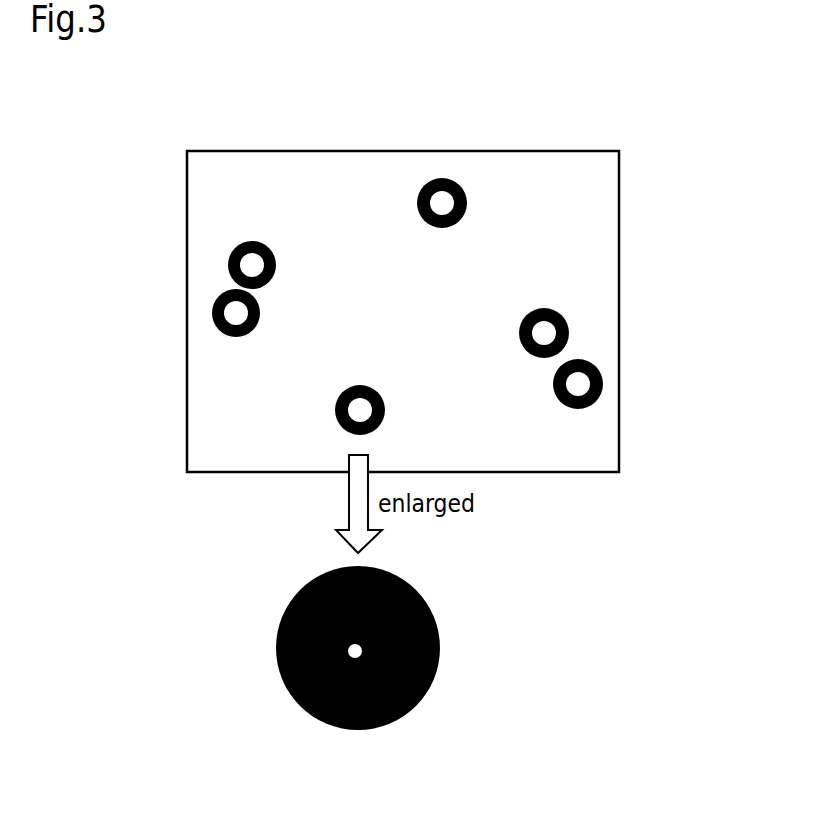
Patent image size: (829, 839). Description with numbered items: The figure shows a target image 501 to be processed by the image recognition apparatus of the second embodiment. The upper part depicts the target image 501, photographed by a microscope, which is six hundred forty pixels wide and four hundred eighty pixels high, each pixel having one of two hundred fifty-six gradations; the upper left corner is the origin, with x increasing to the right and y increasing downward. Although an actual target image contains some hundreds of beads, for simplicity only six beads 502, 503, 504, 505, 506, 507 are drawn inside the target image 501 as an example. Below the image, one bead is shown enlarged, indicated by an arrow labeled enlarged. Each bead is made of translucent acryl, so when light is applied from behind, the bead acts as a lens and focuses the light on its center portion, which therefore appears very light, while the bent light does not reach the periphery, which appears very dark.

The target image 501 is at (619, 181).
The bead 502 is at (445, 178).
The bead 503 is at (229, 271).
The bead 504 is at (212, 315).
The bead 505 is at (567, 318).
The bead 506 is at (600, 373).
The bead 507 is at (340, 421).